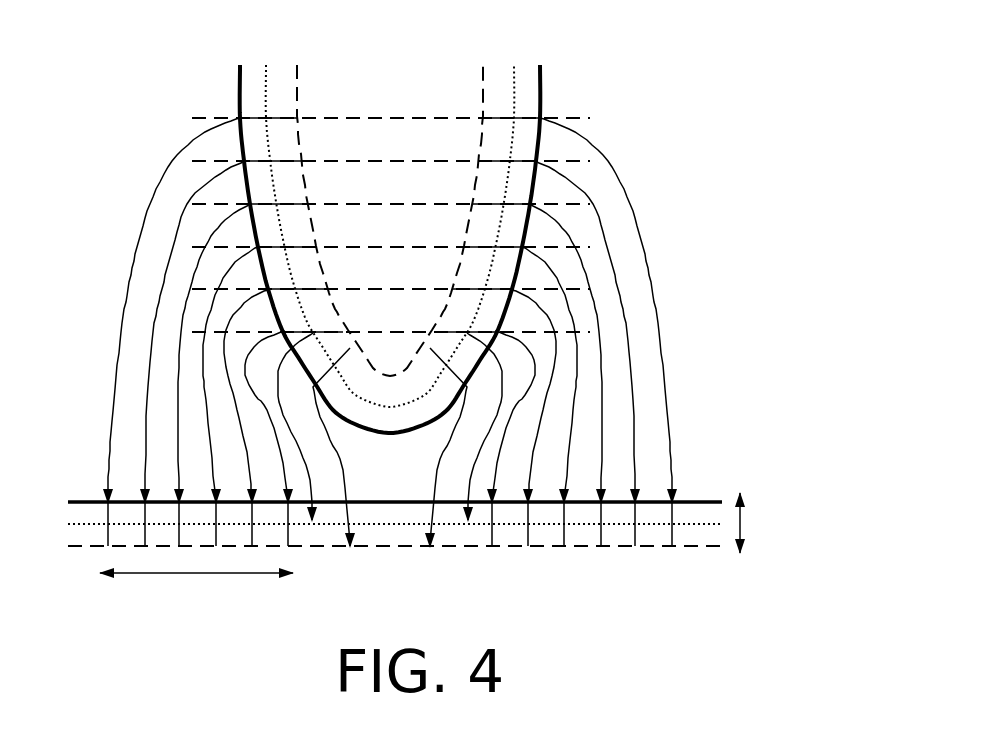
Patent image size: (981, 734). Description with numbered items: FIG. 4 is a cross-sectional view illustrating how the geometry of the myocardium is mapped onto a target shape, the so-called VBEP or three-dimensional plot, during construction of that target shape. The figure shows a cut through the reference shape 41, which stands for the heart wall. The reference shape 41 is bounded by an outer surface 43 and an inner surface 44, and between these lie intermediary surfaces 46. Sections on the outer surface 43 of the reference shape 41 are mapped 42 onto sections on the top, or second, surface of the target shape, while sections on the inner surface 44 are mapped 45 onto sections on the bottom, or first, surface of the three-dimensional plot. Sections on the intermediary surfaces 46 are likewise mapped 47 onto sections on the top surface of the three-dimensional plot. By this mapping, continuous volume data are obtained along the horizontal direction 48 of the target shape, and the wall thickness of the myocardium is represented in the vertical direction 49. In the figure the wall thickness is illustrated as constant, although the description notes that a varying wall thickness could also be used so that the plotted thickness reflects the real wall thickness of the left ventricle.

The reference shape 41 is at (562, 98).
The mapping of outer surface sections 42 is at (512, 400).
The outer surface 43 is at (542, 72).
The inner surface 44 is at (485, 72).
The mapping of inner surface sections 45 is at (432, 491).
The intermediary surfaces 46 is at (518, 68).
The mapping of intermediary surface sections 47 is at (470, 461).
The horizontal direction 48 is at (196, 574).
The vertical direction 49 is at (742, 523).